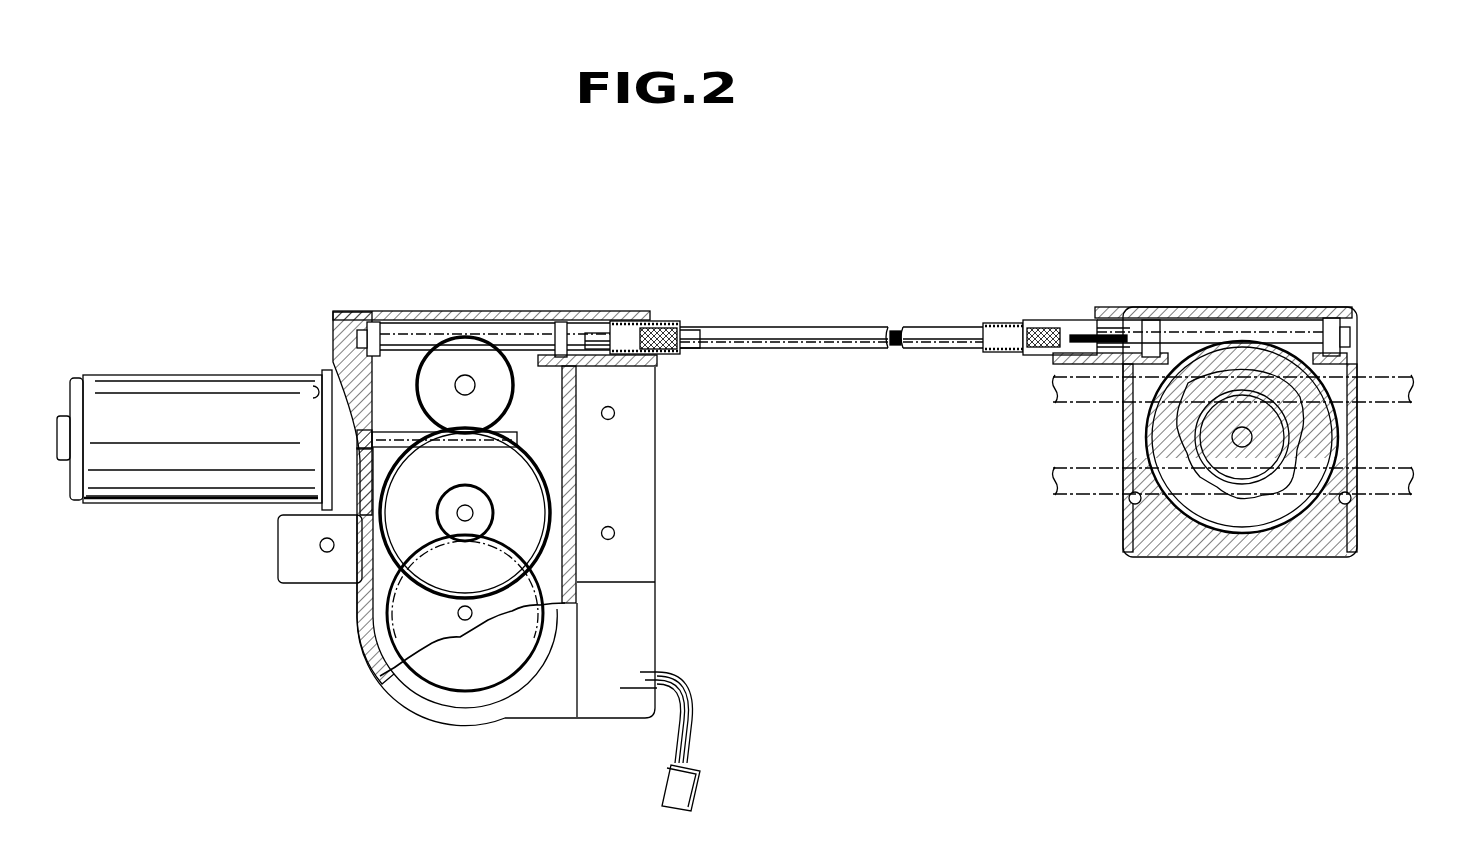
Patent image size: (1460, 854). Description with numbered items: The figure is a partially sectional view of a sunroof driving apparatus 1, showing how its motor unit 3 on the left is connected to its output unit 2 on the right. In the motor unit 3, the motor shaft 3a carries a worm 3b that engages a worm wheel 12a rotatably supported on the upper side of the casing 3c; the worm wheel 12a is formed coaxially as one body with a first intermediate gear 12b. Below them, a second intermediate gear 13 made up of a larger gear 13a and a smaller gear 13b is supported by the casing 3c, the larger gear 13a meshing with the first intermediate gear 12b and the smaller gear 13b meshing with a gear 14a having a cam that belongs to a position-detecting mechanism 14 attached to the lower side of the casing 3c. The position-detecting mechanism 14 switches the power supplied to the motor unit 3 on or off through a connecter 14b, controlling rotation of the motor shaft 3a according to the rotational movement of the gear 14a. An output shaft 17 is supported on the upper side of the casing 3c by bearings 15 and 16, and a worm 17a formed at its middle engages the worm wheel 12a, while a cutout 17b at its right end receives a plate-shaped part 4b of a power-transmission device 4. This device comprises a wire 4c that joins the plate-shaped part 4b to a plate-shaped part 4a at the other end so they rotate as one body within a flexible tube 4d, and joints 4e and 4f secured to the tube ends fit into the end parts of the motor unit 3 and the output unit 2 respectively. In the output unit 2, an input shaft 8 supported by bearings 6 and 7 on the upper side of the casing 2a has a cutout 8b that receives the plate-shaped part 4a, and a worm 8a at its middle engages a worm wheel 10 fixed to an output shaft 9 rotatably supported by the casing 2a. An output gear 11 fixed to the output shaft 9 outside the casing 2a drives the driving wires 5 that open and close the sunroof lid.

The sunroof driving apparatus 1 is at (933, 192).
The output unit 2 is at (1240, 426).
The casing 2a is at (1332, 538).
The motor unit 3 is at (470, 487).
The motor shaft 3a is at (335, 370).
The worm 3b is at (520, 432).
The casing 3c is at (357, 618).
The power-transmission device 4 is at (820, 327).
The plate-shaped part 4a is at (1040, 322).
The plate-shaped part 4b is at (638, 318).
The wire 4c is at (893, 348).
The flexible tube 4d is at (858, 327).
The joint 4e is at (690, 356).
The joint 4f is at (1022, 352).
The driving wires 5 is at (1403, 375).
The bearing 6 is at (1152, 320).
The bearing 7 is at (1333, 318).
The input shaft 8 is at (1112, 320).
The worm 8a is at (1215, 307).
The cutout 8b is at (1085, 320).
The output shaft 9 is at (1232, 436).
The worm wheel 10 is at (1340, 432).
The output gear 11 is at (1190, 470).
The worm wheel 12a is at (513, 381).
The first intermediate gear 12b is at (618, 392).
The second intermediate gear 13 is at (553, 505).
The larger gear 13a is at (556, 484).
The smaller gear 13b is at (433, 517).
The position-detecting mechanism 14 is at (660, 658).
The gear having a cam 14a is at (382, 672).
The connecter 14b is at (700, 757).
The bearing 15 is at (372, 318).
The bearing 16 is at (562, 318).
The output shaft 17 is at (585, 318).
The worm 17a is at (428, 318).
The cutout 17b is at (668, 320).